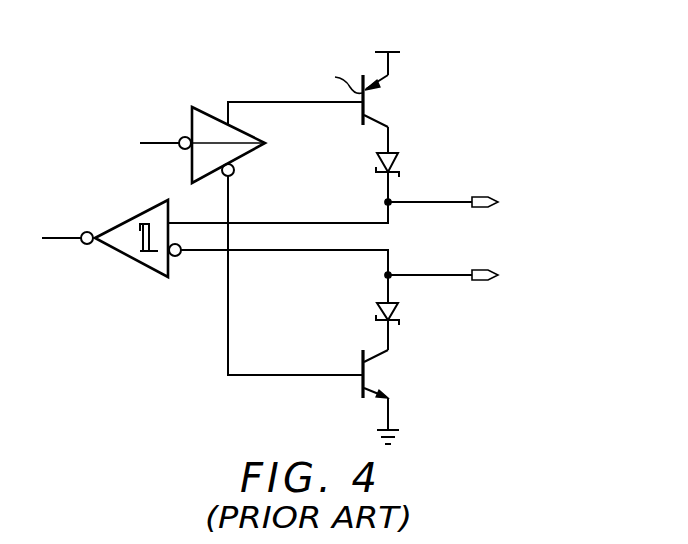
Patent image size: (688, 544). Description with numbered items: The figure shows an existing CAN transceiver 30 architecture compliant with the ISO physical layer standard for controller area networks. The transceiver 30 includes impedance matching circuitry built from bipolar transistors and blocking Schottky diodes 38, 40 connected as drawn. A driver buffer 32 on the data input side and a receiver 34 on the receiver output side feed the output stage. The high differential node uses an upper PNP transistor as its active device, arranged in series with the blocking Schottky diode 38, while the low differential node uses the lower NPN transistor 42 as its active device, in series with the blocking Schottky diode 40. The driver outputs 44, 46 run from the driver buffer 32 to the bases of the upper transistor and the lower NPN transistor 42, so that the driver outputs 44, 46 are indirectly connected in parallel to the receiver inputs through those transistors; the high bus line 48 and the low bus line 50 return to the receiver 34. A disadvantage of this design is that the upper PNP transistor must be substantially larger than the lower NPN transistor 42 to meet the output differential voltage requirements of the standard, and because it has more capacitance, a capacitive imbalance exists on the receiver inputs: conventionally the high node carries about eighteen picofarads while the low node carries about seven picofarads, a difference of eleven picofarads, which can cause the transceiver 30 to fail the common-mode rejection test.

The transceiver 30 is at (118, 358).
The buffer / driver amplifier 32 is at (244, 162).
The receiver 34 is at (130, 258).
The blocking Schottky diode 38 is at (398, 163).
The blocking Schottky diode 40 is at (398, 313).
The NPN transistor 42 is at (362, 383).
The driver output 44 is at (265, 100).
The driver output 46 is at (227, 312).
The CANH bus line 48 is at (338, 223).
The CANL bus line 50 is at (338, 253).